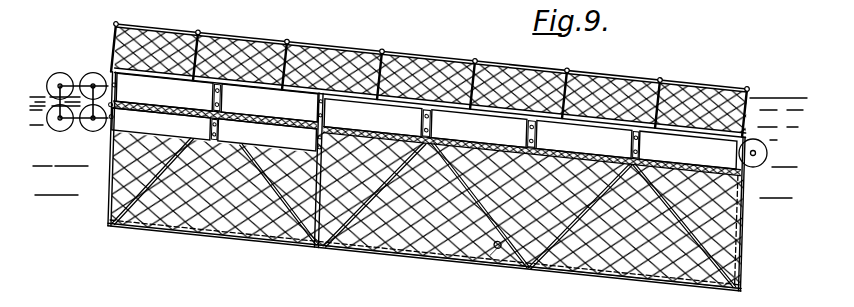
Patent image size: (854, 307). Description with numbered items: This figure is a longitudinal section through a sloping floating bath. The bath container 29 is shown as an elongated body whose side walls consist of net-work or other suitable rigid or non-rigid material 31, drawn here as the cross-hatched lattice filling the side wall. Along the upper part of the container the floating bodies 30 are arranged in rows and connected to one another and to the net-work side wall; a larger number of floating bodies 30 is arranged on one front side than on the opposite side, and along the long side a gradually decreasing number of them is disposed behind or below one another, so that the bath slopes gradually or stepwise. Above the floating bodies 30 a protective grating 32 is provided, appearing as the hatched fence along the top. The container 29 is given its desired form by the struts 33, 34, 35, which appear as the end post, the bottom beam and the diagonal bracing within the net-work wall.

The bath container 29 is at (176, 224).
The floating bodies 30 is at (63, 75).
The net-work side wall material 31 is at (240, 226).
The protective grating 32 is at (430, 79).
The strut 33 is at (741, 236).
The strut 34 is at (405, 255).
The strut 35 is at (510, 257).